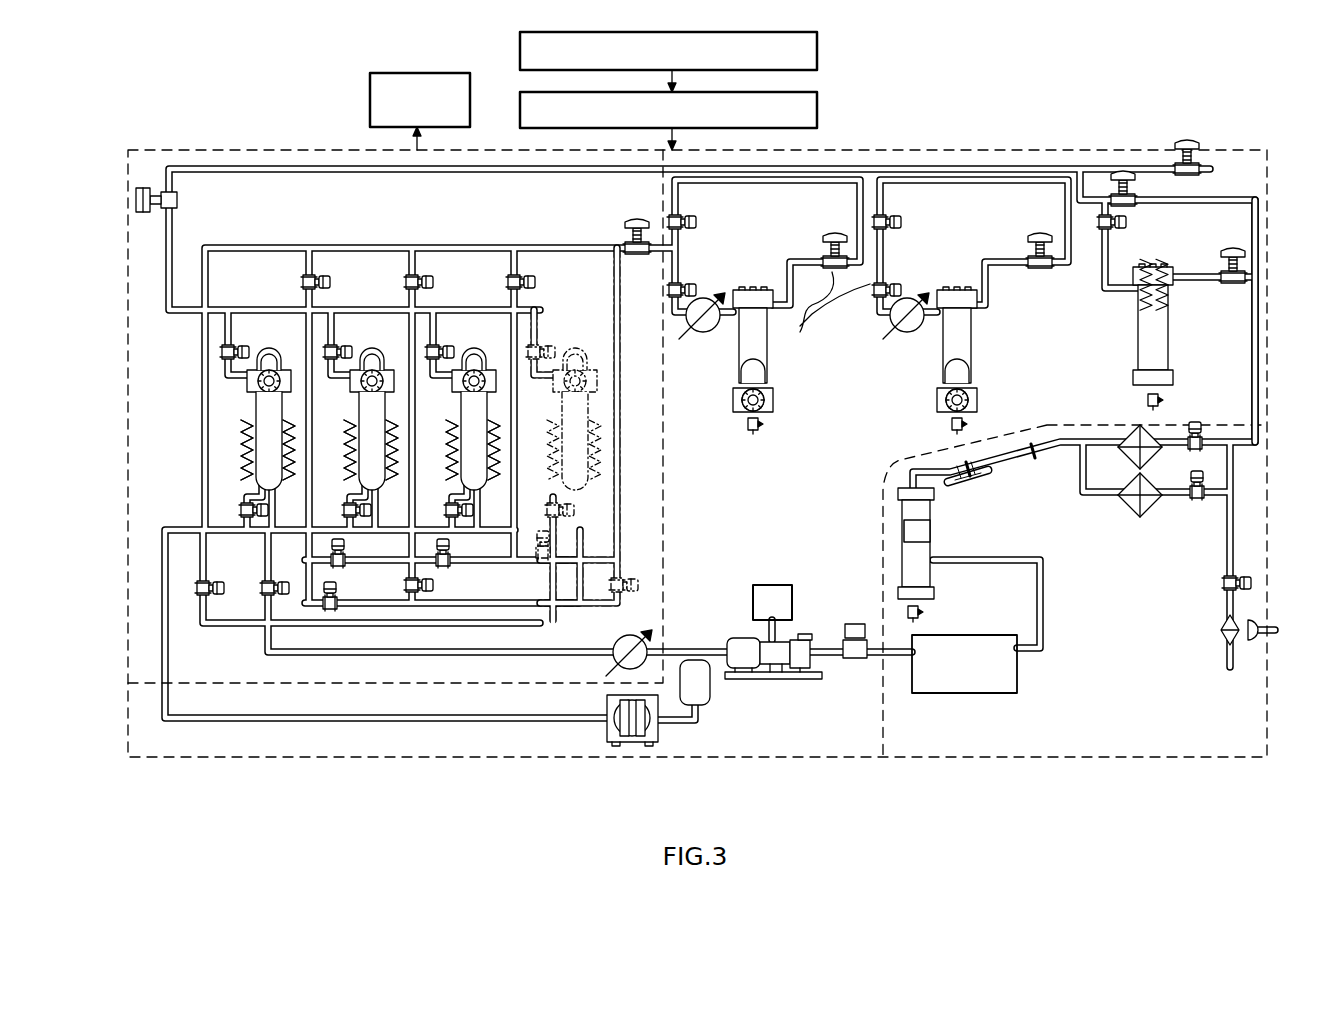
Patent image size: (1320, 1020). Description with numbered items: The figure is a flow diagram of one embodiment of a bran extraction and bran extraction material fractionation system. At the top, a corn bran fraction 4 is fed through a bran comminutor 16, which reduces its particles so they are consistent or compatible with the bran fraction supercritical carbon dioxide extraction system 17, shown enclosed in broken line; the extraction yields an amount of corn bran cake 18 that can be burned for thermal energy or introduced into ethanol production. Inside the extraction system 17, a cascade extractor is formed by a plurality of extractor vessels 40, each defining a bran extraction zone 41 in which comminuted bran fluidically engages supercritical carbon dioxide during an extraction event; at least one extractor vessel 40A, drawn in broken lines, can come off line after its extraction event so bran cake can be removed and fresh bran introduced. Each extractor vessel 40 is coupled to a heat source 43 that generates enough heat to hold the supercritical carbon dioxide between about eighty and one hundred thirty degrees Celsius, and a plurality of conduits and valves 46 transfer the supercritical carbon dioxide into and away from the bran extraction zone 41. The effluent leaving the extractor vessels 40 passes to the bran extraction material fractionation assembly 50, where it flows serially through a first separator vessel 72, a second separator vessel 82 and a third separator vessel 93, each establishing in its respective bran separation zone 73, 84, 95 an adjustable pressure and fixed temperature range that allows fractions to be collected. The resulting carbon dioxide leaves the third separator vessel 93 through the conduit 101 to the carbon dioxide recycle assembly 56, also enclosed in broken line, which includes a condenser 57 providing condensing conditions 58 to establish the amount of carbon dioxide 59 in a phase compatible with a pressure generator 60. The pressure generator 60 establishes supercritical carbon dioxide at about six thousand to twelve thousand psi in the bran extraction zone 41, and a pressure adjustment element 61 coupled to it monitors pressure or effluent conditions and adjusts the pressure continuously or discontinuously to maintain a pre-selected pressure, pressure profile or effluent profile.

The corn bran fraction 4 is at (668, 51).
The bran comminutor 16 is at (668, 110).
The bran fraction supercritical carbon dioxide extraction system 17 is at (258, 153).
The corn bran cake 18 is at (420, 100).
The extractor vessel 40 is at (257, 451).
The extractor vessel 40A is at (582, 468).
The bran extraction zone 41 is at (833, 315).
The heat source 43 is at (300, 463).
The conduits and valves 46 is at (192, 530).
The bran extraction material fractionation assembly 50 is at (1120, 150).
The carbon dioxide recycle assembly 56 is at (1267, 722).
The condenser 57 is at (966, 533).
The condensing conditions 58 is at (953, 512).
The amount of carbon dioxide 59 is at (964, 664).
The pressure generator 60 is at (790, 680).
The pressure adjustment element 61 is at (772, 602).
The first separator vessel 72 is at (770, 355).
The bran separation zone 73 is at (750, 372).
The second separator vessel 82 is at (975, 352).
The bran separation zone 84 is at (953, 372).
The third separator vessel 93 is at (1168, 334).
The bran separation zone 95 is at (1145, 349).
The conduit 101 is at (1255, 300).